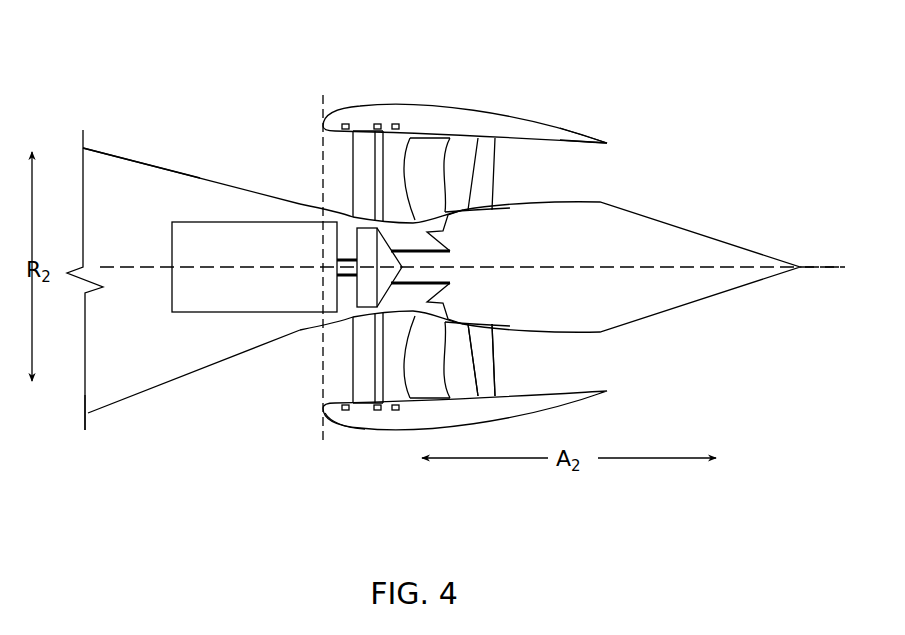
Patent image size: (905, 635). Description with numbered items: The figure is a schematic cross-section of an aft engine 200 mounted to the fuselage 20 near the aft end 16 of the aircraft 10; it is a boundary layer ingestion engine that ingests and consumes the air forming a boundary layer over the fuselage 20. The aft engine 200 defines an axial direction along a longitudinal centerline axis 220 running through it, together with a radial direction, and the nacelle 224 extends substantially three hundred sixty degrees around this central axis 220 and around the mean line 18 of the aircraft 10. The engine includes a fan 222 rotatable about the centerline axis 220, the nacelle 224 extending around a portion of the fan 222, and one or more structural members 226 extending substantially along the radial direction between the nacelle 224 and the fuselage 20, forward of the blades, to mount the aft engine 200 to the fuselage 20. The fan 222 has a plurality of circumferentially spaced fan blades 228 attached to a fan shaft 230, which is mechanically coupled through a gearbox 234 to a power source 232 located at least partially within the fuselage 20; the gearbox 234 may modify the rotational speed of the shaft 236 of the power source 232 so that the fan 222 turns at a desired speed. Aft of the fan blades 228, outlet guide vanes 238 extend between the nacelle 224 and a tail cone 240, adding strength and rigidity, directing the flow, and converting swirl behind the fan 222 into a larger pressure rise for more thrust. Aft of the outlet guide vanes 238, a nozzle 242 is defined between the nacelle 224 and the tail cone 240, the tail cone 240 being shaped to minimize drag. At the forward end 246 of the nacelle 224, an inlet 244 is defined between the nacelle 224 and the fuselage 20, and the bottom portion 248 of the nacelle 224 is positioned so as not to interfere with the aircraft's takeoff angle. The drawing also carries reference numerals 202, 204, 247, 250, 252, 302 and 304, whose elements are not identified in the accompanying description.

The aircraft 10 is at (206, 108).
The aft end 16 is at (732, 178).
The mean line 18 is at (125, 262).
The fuselage 20 is at (128, 152).
The aft engine 200 is at (682, 75).
The upper duct wall 202 is at (148, 160).
The lower duct wall 204 is at (168, 380).
The longitudinal centerline axis 220 is at (830, 262).
The fan 222 is at (432, 150).
The nacelle 224 is at (445, 103).
The structural members 226 is at (360, 146).
The fan blades 228 is at (455, 163).
The fan shaft 230 is at (435, 256).
The power source 232 is at (275, 200).
The gearbox 234 is at (356, 240).
The shaft 236 is at (305, 316).
The outlet guide vanes 238 is at (488, 360).
The tail cone 240 is at (652, 207).
The nozzle 242 is at (590, 175).
The inlet 244 is at (330, 382).
The forward end 246 is at (282, 455).
The fan blade tip 247 is at (343, 147).
The bottom portion 248 is at (388, 438).
The nacelle lower portion 250 is at (455, 415).
The exhaust flow 252 is at (620, 380).
The upper intake edge 302 is at (100, 128).
The lower intake edge 304 is at (101, 418).